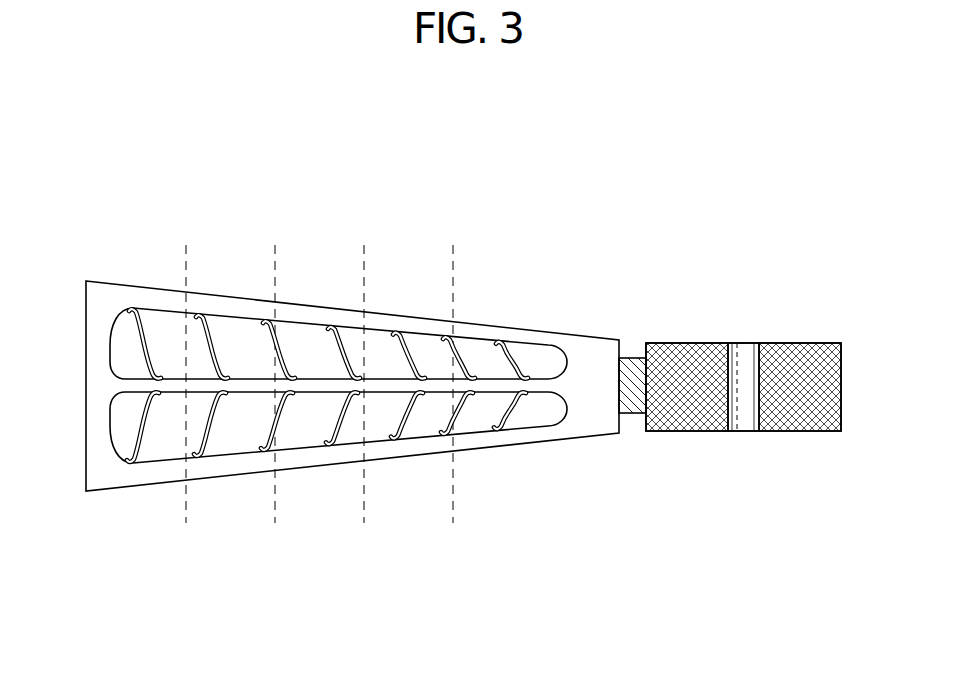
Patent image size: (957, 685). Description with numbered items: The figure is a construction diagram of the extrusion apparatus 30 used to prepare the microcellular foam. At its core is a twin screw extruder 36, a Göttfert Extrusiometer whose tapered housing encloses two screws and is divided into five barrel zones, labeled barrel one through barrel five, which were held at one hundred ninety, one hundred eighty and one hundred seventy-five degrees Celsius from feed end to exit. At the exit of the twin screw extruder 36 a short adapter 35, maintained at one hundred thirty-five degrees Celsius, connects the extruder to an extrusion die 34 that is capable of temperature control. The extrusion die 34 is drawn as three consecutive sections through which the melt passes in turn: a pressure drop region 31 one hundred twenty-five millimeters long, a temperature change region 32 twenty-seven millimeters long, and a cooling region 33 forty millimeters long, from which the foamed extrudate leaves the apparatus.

The extrusion apparatus 30 is at (332, 211).
The pressure drop region 31 is at (694, 434).
The temperature change region 32 is at (745, 434).
The cooling region 33 is at (805, 434).
The extrusion die 34 is at (805, 326).
The adapter 35 is at (629, 356).
The twin screw extruder 36 is at (127, 499).